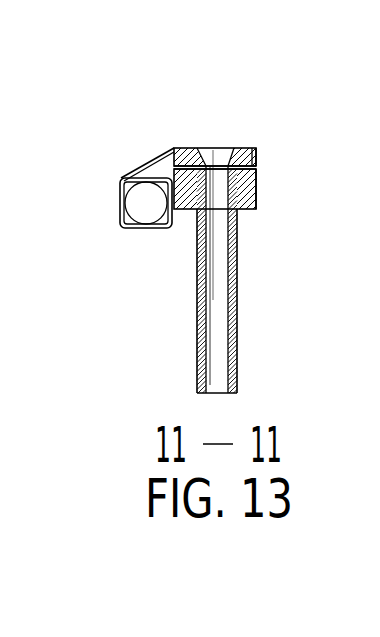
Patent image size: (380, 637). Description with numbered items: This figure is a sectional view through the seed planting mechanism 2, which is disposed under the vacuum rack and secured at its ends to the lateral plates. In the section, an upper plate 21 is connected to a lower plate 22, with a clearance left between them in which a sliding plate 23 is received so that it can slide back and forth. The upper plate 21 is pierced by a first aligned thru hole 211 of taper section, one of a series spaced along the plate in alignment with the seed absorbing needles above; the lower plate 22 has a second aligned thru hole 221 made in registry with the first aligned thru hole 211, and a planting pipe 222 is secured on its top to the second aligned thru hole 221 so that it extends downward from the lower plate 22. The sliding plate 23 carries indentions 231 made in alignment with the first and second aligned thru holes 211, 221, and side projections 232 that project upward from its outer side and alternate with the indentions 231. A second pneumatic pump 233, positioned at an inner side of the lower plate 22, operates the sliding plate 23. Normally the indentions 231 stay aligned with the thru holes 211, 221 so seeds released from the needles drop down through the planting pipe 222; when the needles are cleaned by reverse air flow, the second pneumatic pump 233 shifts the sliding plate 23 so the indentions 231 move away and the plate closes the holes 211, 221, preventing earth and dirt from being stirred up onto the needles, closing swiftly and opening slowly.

The seed planting mechanism 2 is at (284, 135).
The upper plate 21 is at (187, 151).
The first aligned thru holes 211 is at (213, 148).
The lower plate 22 is at (258, 182).
The second aligned thru holes 221 is at (312, 202).
The planting pipes 222 is at (238, 261).
The sliding plate 23 is at (128, 138).
The indentions 231 is at (288, 98).
The side projections 232 is at (257, 154).
The second pneumatic pump 233 is at (143, 207).